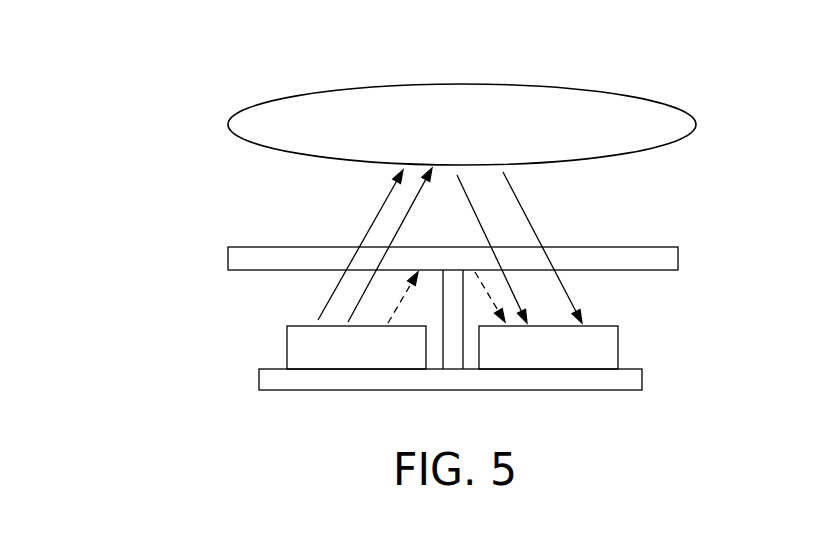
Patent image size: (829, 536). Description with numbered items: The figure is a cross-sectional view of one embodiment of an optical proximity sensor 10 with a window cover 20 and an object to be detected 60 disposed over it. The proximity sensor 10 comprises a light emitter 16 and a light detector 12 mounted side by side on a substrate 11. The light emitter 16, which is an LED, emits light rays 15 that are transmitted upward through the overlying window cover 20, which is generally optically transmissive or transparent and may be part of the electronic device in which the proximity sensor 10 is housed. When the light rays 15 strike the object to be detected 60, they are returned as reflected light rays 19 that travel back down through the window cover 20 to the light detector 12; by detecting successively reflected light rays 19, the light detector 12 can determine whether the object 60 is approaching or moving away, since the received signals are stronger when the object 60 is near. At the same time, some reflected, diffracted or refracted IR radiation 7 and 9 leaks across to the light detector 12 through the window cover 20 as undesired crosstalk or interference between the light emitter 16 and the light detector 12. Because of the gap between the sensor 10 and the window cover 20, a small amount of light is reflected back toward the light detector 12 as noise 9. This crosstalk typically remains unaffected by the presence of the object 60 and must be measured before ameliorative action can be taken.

The optical proximity sensor 10 is at (114, 268).
The substrate 11 is at (627, 381).
The light detector 12 is at (607, 348).
The light emitter 16 is at (305, 347).
The window cover 20 is at (678, 260).
The object to be detected 60 is at (652, 100).
The light rays 15 is at (373, 223).
The reflected light rays 19 is at (530, 218).
The reflected, diffracted or refracted IR radiation 7 is at (398, 300).
The reflected, diffracted or refracted IR radiation (noise) 9 is at (490, 300).